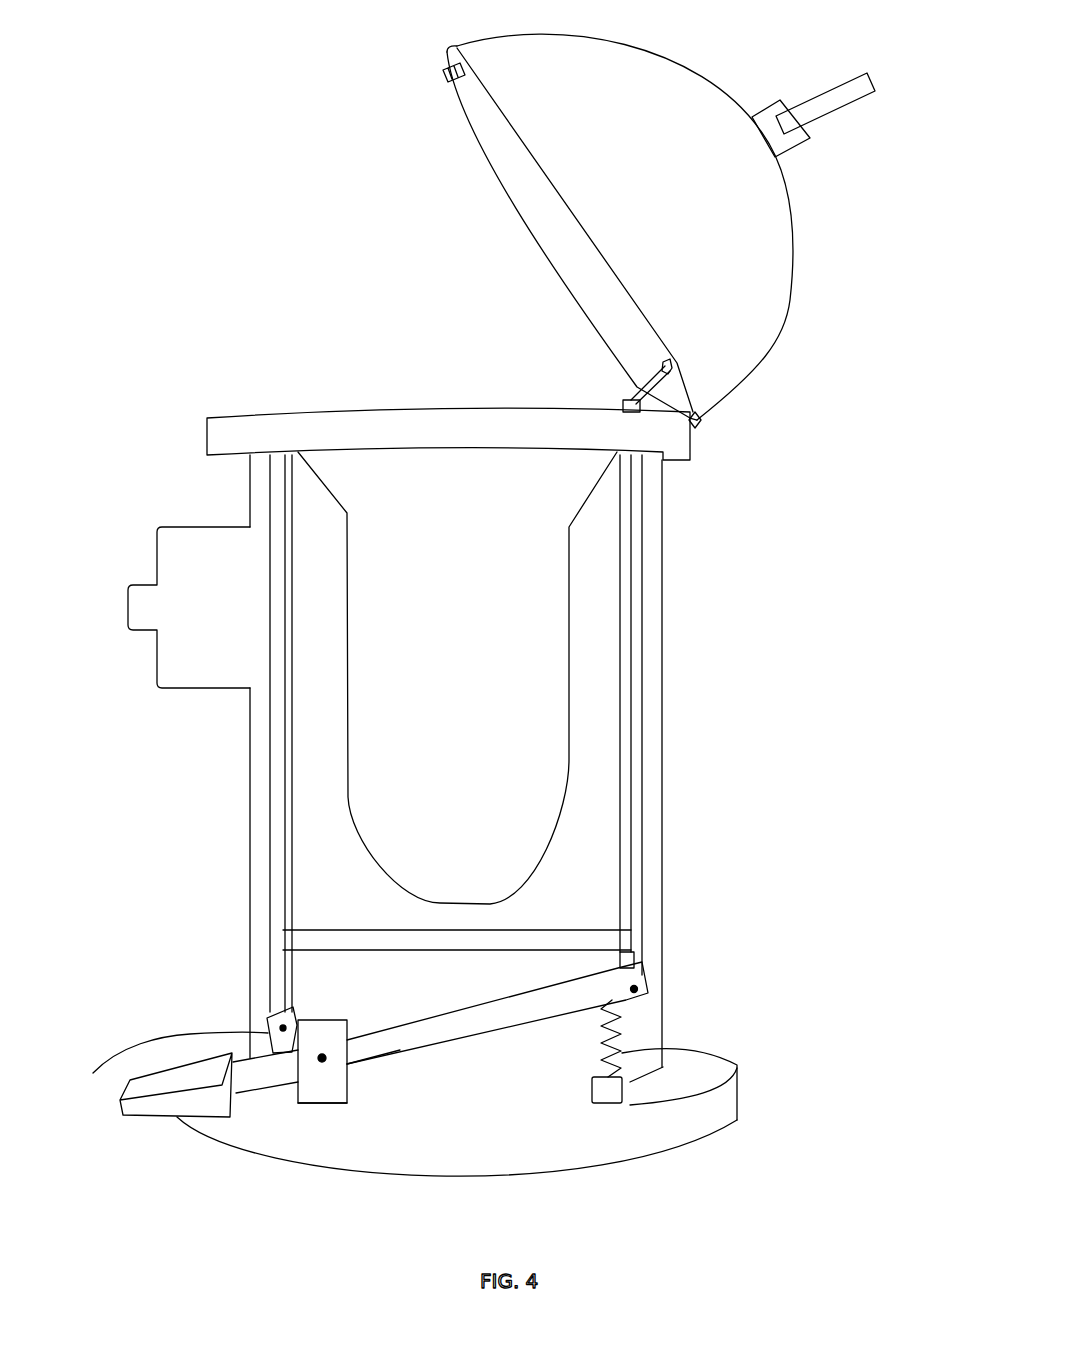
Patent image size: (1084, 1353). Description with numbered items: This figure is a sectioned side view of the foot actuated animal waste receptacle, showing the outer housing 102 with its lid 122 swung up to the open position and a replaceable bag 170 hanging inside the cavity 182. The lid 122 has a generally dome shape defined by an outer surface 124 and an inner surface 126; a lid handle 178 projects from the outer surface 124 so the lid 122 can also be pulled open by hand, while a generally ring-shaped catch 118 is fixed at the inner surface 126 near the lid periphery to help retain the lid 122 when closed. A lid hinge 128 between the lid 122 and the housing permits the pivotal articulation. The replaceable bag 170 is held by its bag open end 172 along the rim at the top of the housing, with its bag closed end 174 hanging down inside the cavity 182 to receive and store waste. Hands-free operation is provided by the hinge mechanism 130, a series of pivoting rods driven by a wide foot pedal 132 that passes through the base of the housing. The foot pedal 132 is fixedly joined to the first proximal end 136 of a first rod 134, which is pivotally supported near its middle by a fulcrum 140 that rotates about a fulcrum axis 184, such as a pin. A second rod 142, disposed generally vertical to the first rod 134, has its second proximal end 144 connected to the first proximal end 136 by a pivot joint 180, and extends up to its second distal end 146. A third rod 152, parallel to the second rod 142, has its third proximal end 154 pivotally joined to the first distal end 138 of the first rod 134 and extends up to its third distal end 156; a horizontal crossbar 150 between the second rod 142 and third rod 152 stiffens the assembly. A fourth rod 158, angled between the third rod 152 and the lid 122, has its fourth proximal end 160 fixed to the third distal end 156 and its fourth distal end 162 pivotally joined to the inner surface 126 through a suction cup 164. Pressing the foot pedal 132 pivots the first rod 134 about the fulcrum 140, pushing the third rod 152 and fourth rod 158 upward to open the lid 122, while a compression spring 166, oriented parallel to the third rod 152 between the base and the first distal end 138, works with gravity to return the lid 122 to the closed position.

The outer housing 102 is at (225, 663).
The catch 118 is at (447, 72).
The lid 122 is at (540, 200).
The outer surface 124 is at (620, 227).
The inner surface 126 is at (575, 230).
The lid hinge 128 is at (700, 424).
The hinge mechanism 130 is at (357, 1124).
The foot pedal 132 is at (180, 1097).
The first rod 134 is at (523, 1023).
The first proximal end 136 is at (263, 1077).
The first distal end 138 is at (620, 1008).
The fulcrum 140 is at (337, 1092).
The second rod 142 is at (273, 713).
The second proximal end 144 is at (278, 902).
The second distal end 146 is at (273, 470).
The crossbar 150 is at (593, 938).
The third rod 152 is at (628, 623).
The third proximal end 154 is at (632, 977).
The third distal end 156 is at (622, 470).
The fourth rod 158 is at (637, 383).
The fourth proximal end 160 is at (630, 393).
The fourth distal end 162 is at (663, 373).
The suction cup 164 is at (662, 363).
The compression spring 166 is at (690, 1068).
The replaceable bag 170 is at (457, 678).
The bag open end 172 is at (380, 463).
The bag closed end 174 is at (487, 903).
The lid handle 178 is at (850, 97).
The pivot joint 180 is at (161, 1062).
The cavity 182 is at (567, 892).
The fulcrum axis 184 is at (350, 1068).